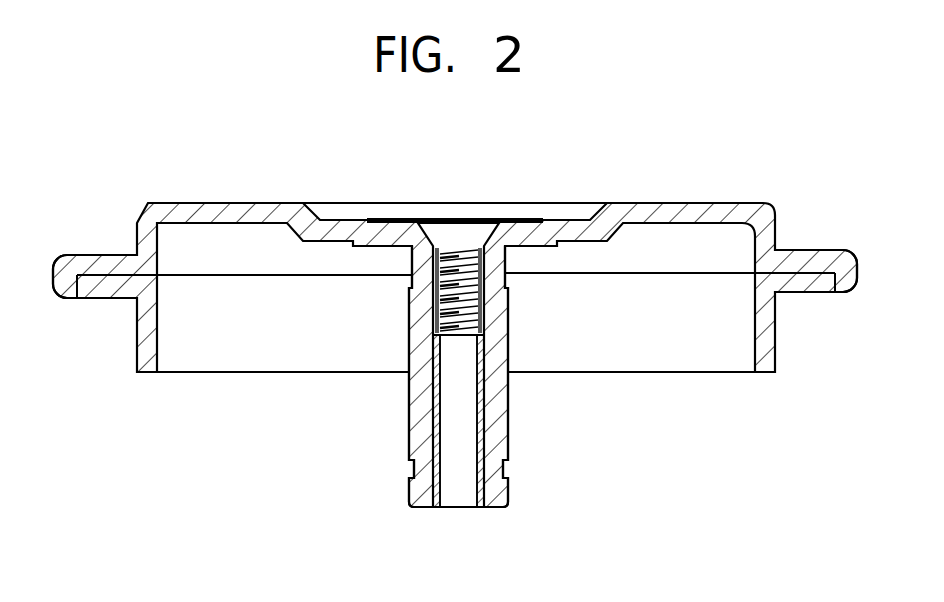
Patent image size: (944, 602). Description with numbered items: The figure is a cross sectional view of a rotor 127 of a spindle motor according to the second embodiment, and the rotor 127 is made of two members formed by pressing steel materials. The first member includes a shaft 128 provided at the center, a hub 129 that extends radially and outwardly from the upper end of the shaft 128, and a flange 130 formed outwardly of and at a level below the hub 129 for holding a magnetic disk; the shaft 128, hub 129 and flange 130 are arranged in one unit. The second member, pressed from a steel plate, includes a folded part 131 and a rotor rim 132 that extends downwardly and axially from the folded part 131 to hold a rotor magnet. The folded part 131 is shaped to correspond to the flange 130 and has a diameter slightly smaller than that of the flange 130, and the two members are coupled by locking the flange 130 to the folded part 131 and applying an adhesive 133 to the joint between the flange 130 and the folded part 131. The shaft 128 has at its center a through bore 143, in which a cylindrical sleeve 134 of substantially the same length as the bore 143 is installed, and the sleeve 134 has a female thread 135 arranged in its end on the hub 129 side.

The rotor 127 is at (566, 201).
The shaft 128 is at (420, 415).
The hub 129 is at (240, 203).
The flange 130 is at (807, 257).
The folded part 131 is at (807, 294).
The rotor rim 132 is at (137, 322).
The adhesive 133 is at (837, 297).
The cylindrical sleeve 134 is at (477, 482).
The female thread 135 is at (440, 260).
The through bore 143 is at (482, 409).